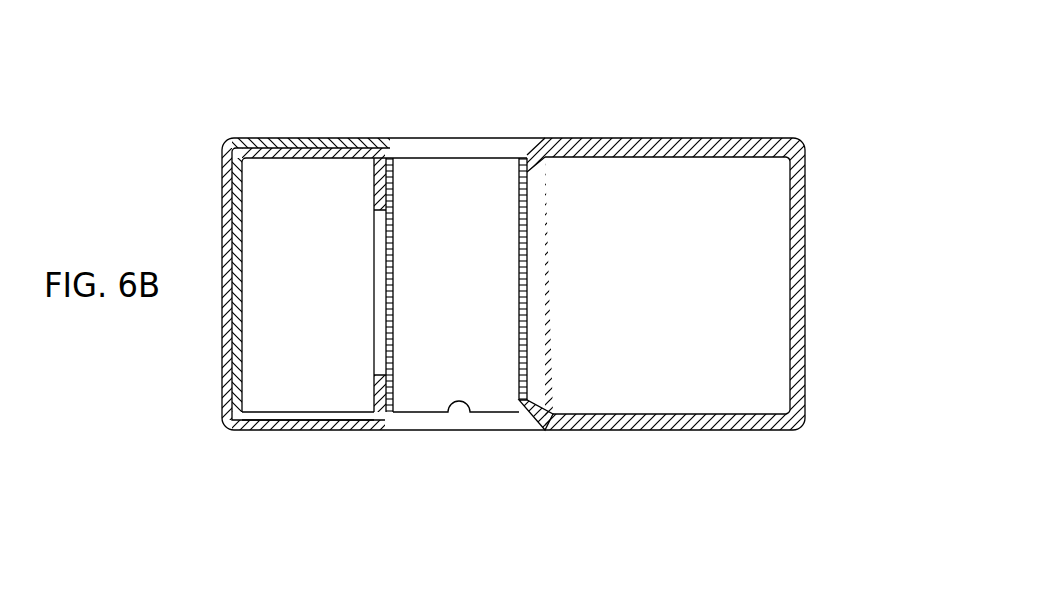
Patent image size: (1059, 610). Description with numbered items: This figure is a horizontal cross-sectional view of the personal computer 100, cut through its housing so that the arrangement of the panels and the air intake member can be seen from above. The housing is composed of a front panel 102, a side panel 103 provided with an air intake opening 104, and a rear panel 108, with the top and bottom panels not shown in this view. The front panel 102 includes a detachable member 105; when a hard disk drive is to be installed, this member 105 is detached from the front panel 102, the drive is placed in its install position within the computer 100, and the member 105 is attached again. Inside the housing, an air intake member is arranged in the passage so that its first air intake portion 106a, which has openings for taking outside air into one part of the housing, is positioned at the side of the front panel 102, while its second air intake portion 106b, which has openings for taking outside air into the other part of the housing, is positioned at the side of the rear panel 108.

The computer 100 is at (673, 102).
The front panel 102 is at (222, 184).
The side panel 103 is at (674, 430).
The air intake opening 104 is at (450, 420).
The detachable member 105 is at (272, 430).
The first air intake portion 106a is at (393, 357).
The second air intake portion 106b is at (518, 360).
The rear panel 108 is at (805, 247).